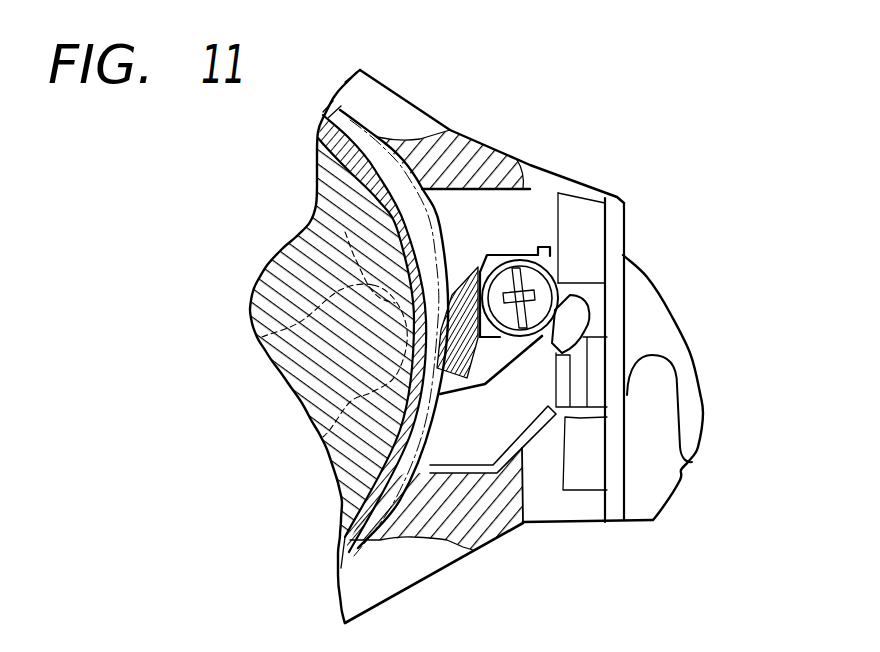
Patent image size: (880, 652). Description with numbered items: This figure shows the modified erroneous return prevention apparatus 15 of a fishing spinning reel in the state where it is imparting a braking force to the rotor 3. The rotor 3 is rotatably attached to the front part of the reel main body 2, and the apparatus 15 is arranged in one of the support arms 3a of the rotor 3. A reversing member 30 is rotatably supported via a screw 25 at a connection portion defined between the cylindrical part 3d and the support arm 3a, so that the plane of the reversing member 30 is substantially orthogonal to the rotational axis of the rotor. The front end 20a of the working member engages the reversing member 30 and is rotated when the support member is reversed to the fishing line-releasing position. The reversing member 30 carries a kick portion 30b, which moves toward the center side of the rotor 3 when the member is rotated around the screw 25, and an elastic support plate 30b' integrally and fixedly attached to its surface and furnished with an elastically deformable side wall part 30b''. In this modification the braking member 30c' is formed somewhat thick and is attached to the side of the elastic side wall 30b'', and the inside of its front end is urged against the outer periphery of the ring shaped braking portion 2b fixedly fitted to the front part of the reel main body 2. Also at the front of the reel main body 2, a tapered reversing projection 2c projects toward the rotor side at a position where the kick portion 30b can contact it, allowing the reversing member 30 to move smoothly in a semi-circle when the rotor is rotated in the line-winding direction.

The reel main body 2 is at (280, 250).
The ring shaped braking portion 2b is at (330, 143).
The reversing projection 2c is at (262, 337).
The rotor 3 is at (423, 120).
The support arm 3a is at (623, 450).
The cylindrical part 3d is at (340, 99).
The erroneous return prevention apparatus 15 is at (536, 208).
The front end of working member 20a is at (572, 298).
The screw 25 is at (545, 280).
The reversing member 30 is at (503, 357).
The kick portion 30b is at (329, 354).
The elastic support plate 30b' is at (583, 198).
The elastic side wall part 30b'' is at (507, 493).
The braking member 30c' is at (467, 285).